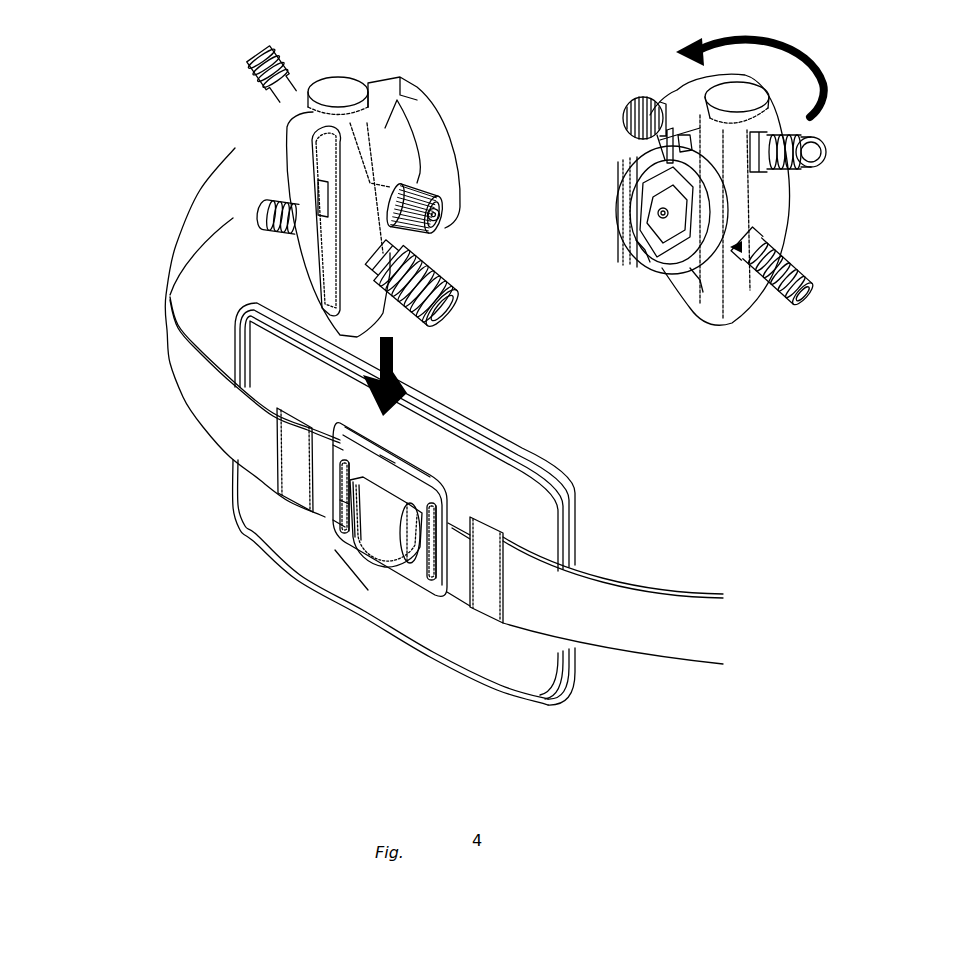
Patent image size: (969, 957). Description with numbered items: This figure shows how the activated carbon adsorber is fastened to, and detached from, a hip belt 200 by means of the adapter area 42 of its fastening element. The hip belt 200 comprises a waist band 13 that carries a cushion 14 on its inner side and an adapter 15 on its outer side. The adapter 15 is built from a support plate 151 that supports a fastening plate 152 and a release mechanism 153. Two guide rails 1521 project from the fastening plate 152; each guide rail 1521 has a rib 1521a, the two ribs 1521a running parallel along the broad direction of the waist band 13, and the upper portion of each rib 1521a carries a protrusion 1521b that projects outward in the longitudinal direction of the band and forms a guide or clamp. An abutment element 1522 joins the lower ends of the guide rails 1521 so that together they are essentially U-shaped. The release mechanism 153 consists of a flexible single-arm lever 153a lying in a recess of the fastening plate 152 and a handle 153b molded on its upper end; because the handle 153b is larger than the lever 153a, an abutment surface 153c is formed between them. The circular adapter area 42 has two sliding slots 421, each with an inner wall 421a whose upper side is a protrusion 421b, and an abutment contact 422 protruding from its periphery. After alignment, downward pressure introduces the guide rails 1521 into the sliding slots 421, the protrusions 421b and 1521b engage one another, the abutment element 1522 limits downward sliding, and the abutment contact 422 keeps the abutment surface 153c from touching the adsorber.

The hip belt 200 is at (103, 193).
The waist band 13 is at (197, 186).
The cushion 14 is at (233, 322).
The adapter 15 is at (315, 428).
The support plate 151 is at (433, 527).
The fastening plate 152 is at (372, 531).
The guide rail 1521 is at (352, 545).
The rib 1521a is at (353, 545).
The protrusion 1521b is at (333, 513).
The abutment element 1522 is at (387, 563).
The release mechanism 153 is at (445, 505).
The lever 153a is at (405, 492).
The handle 153b is at (363, 447).
The abutment surface 153c is at (387, 470).
The adapter area 42 is at (712, 198).
The sliding slot 421 is at (627, 227).
The inner wall 421a is at (640, 243).
The protrusion 421b is at (633, 240).
The abutment contact 422 is at (636, 140).